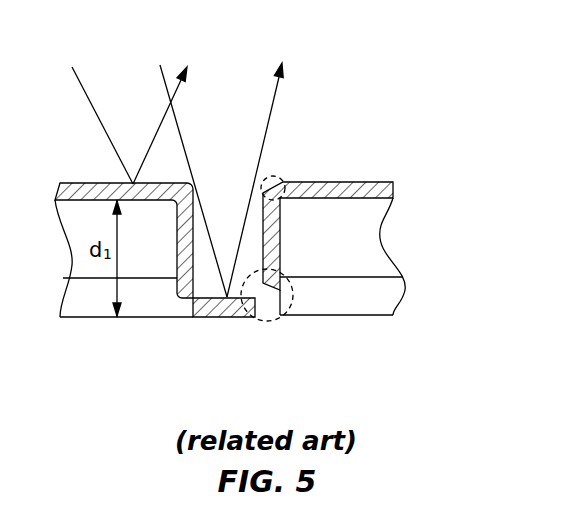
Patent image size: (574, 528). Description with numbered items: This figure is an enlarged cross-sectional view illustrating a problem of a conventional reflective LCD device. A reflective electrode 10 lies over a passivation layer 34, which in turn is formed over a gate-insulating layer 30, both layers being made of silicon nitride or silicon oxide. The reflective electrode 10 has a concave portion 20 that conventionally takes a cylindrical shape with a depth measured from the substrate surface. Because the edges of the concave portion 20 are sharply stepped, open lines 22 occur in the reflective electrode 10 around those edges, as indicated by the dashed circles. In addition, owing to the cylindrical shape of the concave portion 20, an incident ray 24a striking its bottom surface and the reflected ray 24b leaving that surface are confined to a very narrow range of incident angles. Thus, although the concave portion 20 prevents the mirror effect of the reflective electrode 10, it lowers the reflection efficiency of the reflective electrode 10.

The reflective electrode 10 is at (343, 190).
The concave portion 20 is at (221, 193).
The open lines 22 is at (278, 180).
The incident ray 24a is at (162, 66).
The reflected ray 24b is at (283, 70).
The gate-insulating layer 30 is at (392, 300).
The passivation layer 34 is at (363, 242).